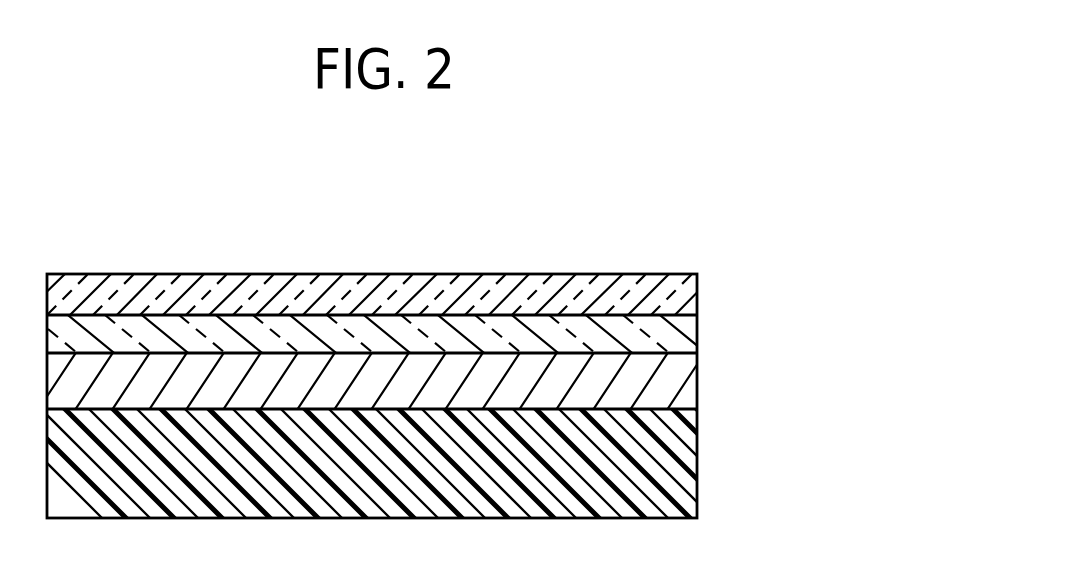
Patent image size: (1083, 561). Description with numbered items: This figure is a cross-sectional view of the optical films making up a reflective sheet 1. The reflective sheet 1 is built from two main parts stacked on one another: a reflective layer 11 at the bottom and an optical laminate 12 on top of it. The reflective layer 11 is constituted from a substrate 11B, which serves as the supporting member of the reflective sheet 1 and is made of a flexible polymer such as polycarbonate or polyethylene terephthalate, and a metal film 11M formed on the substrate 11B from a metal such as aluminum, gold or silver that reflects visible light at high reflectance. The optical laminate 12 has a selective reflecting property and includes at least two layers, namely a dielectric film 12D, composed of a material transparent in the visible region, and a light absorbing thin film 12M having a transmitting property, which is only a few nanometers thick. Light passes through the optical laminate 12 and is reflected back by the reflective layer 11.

The reflective sheet 1 is at (566, 228).
The optical laminate 12 is at (858, 237).
The light absorbing thin film 12M is at (675, 290).
The dielectric film 12D is at (677, 342).
The reflective layer 11 is at (858, 352).
The metal film 11M is at (677, 398).
The substrate 11B is at (677, 460).